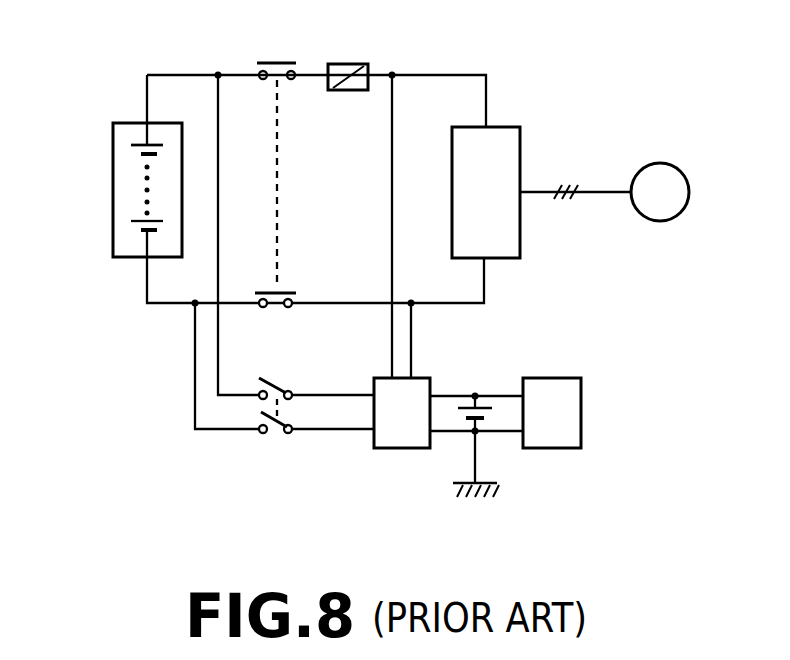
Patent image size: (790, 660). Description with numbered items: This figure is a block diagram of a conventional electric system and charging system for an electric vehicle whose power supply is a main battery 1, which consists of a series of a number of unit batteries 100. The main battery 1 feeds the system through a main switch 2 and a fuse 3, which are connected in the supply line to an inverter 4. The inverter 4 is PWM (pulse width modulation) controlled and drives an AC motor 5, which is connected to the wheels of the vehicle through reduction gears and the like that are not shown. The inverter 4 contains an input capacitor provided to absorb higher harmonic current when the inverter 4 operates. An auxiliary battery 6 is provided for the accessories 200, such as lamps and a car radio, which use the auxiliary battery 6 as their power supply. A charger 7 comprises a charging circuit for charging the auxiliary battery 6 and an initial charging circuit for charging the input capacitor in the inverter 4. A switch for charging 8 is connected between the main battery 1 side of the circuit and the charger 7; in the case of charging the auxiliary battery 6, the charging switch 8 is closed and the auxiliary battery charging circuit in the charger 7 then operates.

The main battery 1 is at (123, 123).
The unit batteries 100 is at (138, 154).
The main switch 2 is at (274, 63).
The fuse 3 is at (350, 64).
The inverter 4 is at (507, 127).
The AC motor 5 is at (684, 174).
The auxiliary battery 6 is at (489, 413).
The charger 7 is at (397, 448).
The switch for charging 8 is at (268, 437).
The accessories 200 is at (581, 408).